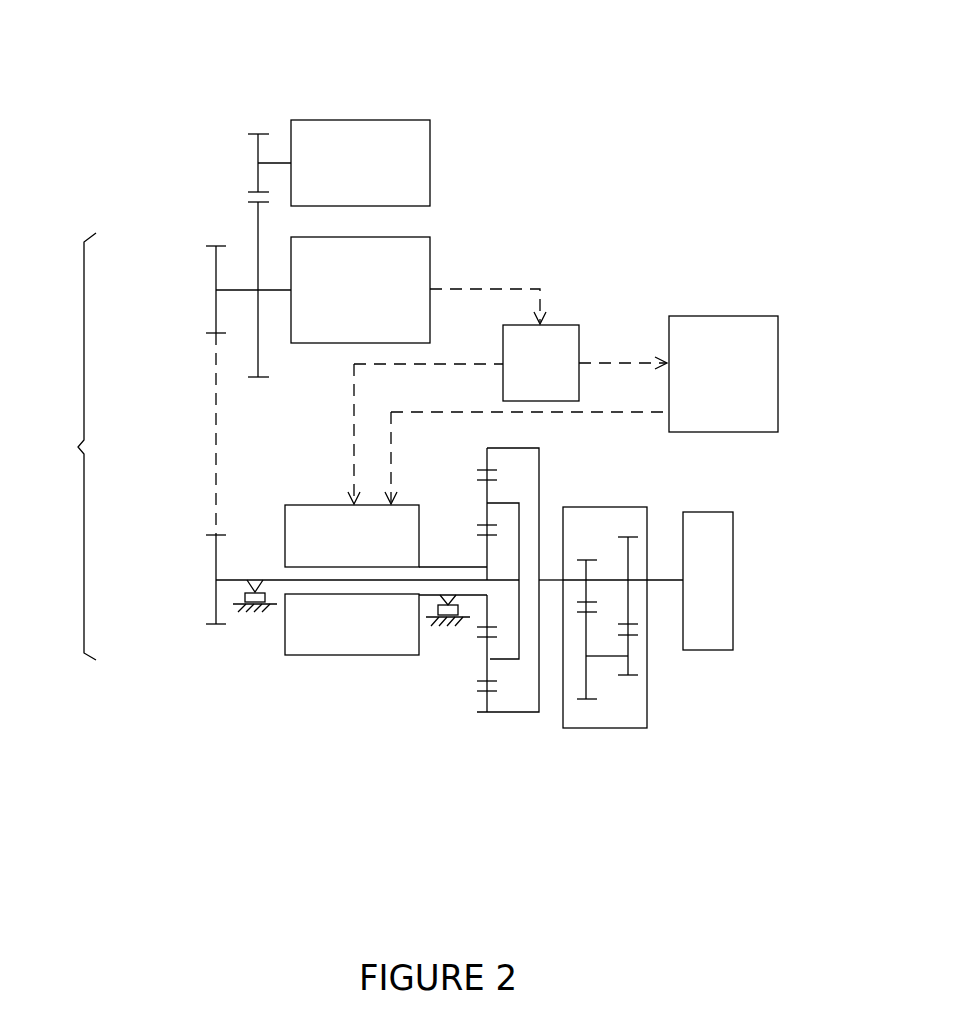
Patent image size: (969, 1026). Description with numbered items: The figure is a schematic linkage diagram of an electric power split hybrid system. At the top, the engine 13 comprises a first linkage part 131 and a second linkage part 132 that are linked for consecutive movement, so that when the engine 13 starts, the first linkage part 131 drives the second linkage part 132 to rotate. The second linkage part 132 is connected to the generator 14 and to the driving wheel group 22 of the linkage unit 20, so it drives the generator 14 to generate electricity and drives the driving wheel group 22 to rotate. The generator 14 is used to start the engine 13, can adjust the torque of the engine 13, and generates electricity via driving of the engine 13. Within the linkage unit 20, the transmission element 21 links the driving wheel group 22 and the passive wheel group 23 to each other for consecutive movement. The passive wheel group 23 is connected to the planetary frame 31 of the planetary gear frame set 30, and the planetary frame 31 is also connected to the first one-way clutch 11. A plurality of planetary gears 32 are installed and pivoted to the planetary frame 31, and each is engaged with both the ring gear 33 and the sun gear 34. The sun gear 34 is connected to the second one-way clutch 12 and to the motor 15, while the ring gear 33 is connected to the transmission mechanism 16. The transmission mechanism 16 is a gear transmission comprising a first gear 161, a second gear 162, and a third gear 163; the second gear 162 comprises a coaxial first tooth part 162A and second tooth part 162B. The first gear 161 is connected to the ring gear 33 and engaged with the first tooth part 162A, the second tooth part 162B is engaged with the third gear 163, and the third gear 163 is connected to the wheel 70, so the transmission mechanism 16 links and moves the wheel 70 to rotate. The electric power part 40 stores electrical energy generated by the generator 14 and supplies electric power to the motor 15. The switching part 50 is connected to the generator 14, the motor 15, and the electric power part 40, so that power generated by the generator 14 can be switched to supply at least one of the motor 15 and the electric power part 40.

The first one-way clutch 11 is at (437, 613).
The second one-way clutch 12 is at (253, 605).
The engine 13 is at (362, 121).
The first linkage part 131 is at (258, 145).
The second linkage part 132 is at (258, 216).
The generator 14 is at (430, 260).
The motor 15 is at (297, 653).
The transmission mechanism 16 is at (705, 641).
The first gear 161 is at (585, 575).
The second gear 162 is at (723, 702).
The first tooth part 162A is at (586, 684).
The second tooth part 162B is at (628, 665).
The third gear 163 is at (623, 555).
The linkage unit 20 is at (66, 446).
The transmission element 21 is at (216, 372).
The driving wheel group 22 is at (216, 262).
The passive wheel group 23 is at (216, 605).
The planetary gear frame set 30 is at (427, 662).
The planetary frame 31 is at (508, 642).
The planetary gears 32 is at (487, 666).
The ring gear 33 is at (487, 703).
The sun gear 34 is at (487, 612).
The electric power part 40 is at (734, 312).
The switching part 50 is at (567, 330).
The wheel 70 is at (733, 533).